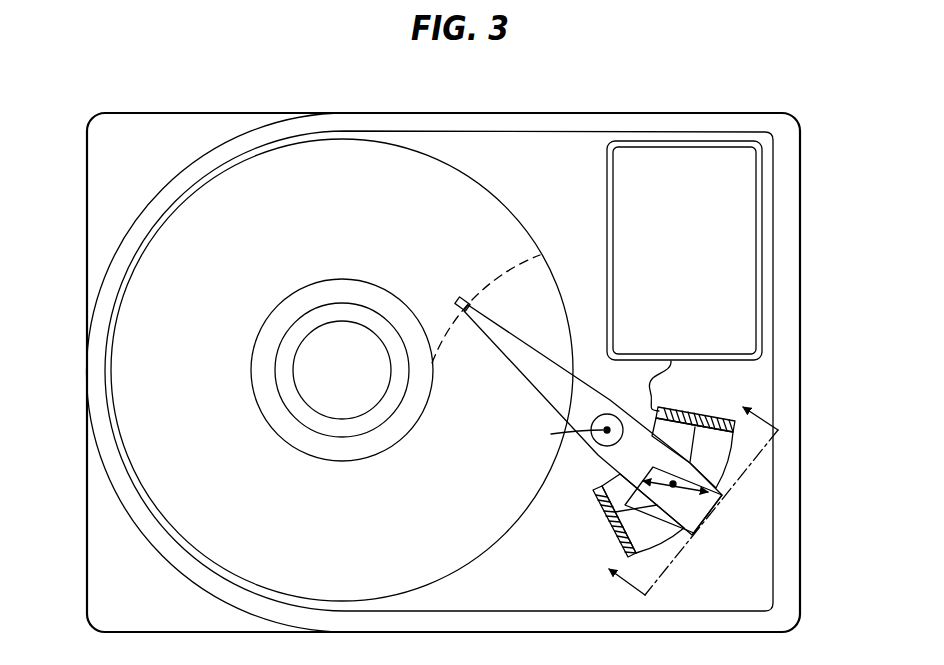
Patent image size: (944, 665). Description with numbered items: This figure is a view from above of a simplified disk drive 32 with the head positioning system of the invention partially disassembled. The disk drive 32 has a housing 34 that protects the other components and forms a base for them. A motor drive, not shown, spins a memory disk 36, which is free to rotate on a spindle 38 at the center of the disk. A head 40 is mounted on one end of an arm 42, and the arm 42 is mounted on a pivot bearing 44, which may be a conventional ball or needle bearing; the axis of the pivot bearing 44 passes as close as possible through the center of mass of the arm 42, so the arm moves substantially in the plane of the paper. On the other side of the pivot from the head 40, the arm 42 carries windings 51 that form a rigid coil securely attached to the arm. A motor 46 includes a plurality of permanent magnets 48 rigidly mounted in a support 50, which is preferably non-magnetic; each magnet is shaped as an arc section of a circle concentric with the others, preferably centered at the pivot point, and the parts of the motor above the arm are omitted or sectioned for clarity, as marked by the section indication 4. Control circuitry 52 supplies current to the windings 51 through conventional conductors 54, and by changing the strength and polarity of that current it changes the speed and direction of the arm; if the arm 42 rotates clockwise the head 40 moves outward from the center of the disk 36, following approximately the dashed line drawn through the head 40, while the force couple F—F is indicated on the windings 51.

The disk drive 32 is at (74, 242).
The housing 34 is at (229, 110).
The memory disk 36 is at (360, 160).
The spindle 38 is at (346, 462).
The head 40 is at (457, 302).
The arm 42 is at (542, 333).
The pivot bearing 44 is at (603, 446).
The motor 46 is at (694, 470).
The permanent magnets 48 is at (681, 411).
The support 50 is at (717, 419).
The windings 51 is at (701, 512).
The control circuitry 52 is at (690, 139).
The conductors 54 is at (683, 357).
The section line 4- 4 is at (690, 491).